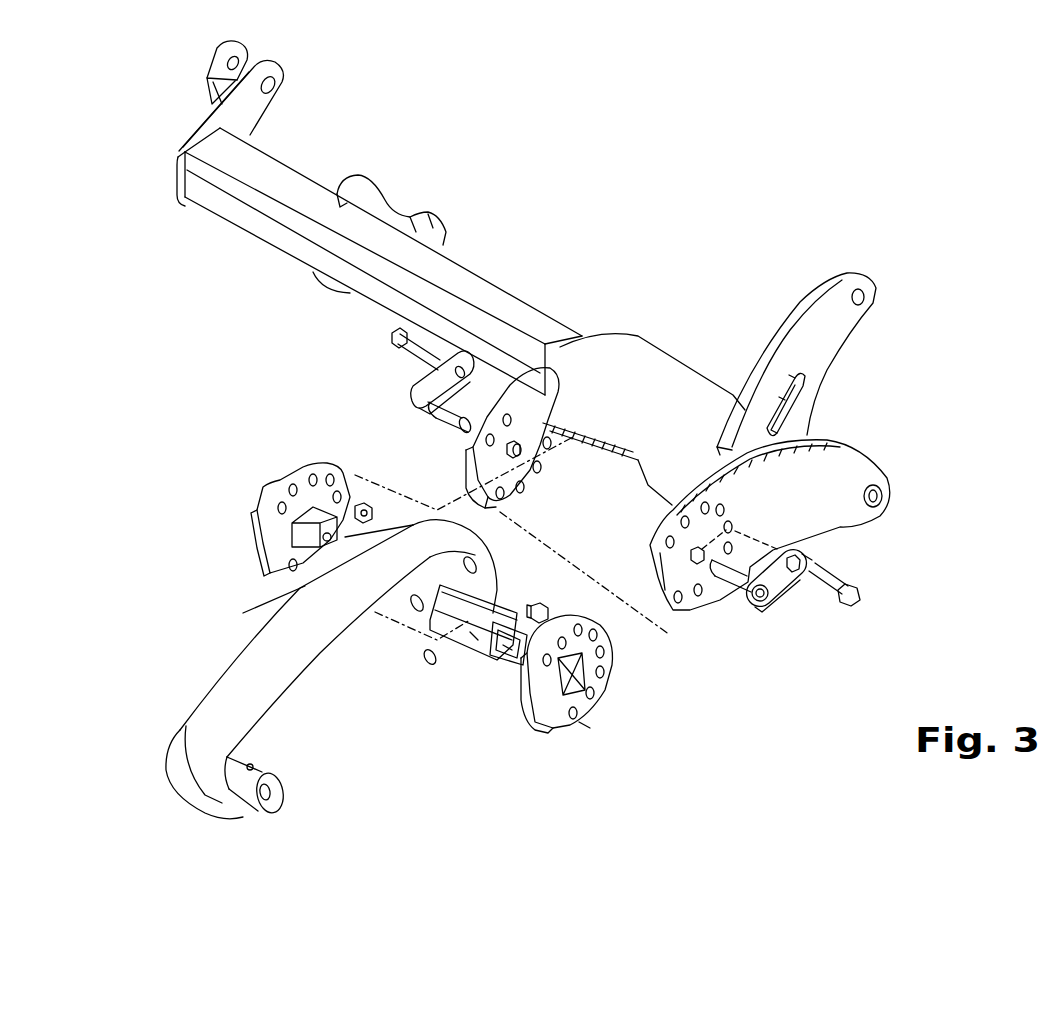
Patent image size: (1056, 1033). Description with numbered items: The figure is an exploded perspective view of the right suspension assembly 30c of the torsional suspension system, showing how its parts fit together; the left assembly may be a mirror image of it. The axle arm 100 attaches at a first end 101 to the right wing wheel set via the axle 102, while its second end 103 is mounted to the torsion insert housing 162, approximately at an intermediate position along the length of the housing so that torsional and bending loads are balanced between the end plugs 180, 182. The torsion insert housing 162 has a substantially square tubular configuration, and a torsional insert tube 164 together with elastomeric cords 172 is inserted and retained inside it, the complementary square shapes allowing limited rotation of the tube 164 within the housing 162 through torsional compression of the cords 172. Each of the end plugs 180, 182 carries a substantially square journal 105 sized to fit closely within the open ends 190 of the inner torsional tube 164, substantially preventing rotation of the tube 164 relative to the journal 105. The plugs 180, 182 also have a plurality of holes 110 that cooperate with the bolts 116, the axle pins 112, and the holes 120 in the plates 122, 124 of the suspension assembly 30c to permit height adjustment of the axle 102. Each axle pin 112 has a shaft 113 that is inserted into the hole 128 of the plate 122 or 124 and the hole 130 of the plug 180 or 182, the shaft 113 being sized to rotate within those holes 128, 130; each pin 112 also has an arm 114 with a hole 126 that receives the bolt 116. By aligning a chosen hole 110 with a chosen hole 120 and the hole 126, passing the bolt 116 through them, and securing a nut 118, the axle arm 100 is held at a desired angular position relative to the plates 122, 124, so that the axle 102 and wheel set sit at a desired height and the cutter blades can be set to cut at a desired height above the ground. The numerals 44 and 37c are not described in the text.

The right suspension assembly 30c is at (495, 272).
The clevis bracket 44 is at (193, 118).
The curved arm 37c is at (833, 323).
The axle arm 100 is at (218, 678).
The first end 101 is at (218, 797).
The axle 102 is at (267, 812).
The second end 103 is at (425, 662).
The square journal 105 is at (243, 613).
The holes 110 is at (312, 476).
The axle pin 112 is at (417, 397).
The shaft 113 is at (443, 413).
The arm 114 is at (455, 372).
The bolt 116 is at (395, 338).
The nut 118 is at (535, 603).
The holes 120 is at (725, 508).
The plate 122 is at (523, 473).
The plate 124 is at (703, 603).
The hole 126 is at (807, 558).
The hole 128 is at (513, 452).
The hole 130 is at (557, 718).
The torsion insert housing 162 is at (477, 633).
The torsional insert tube 164 is at (508, 655).
The elastomeric cords 172 is at (485, 660).
The end plug 180 is at (586, 727).
The end plug 182 is at (265, 537).
The open ends 190 is at (490, 667).